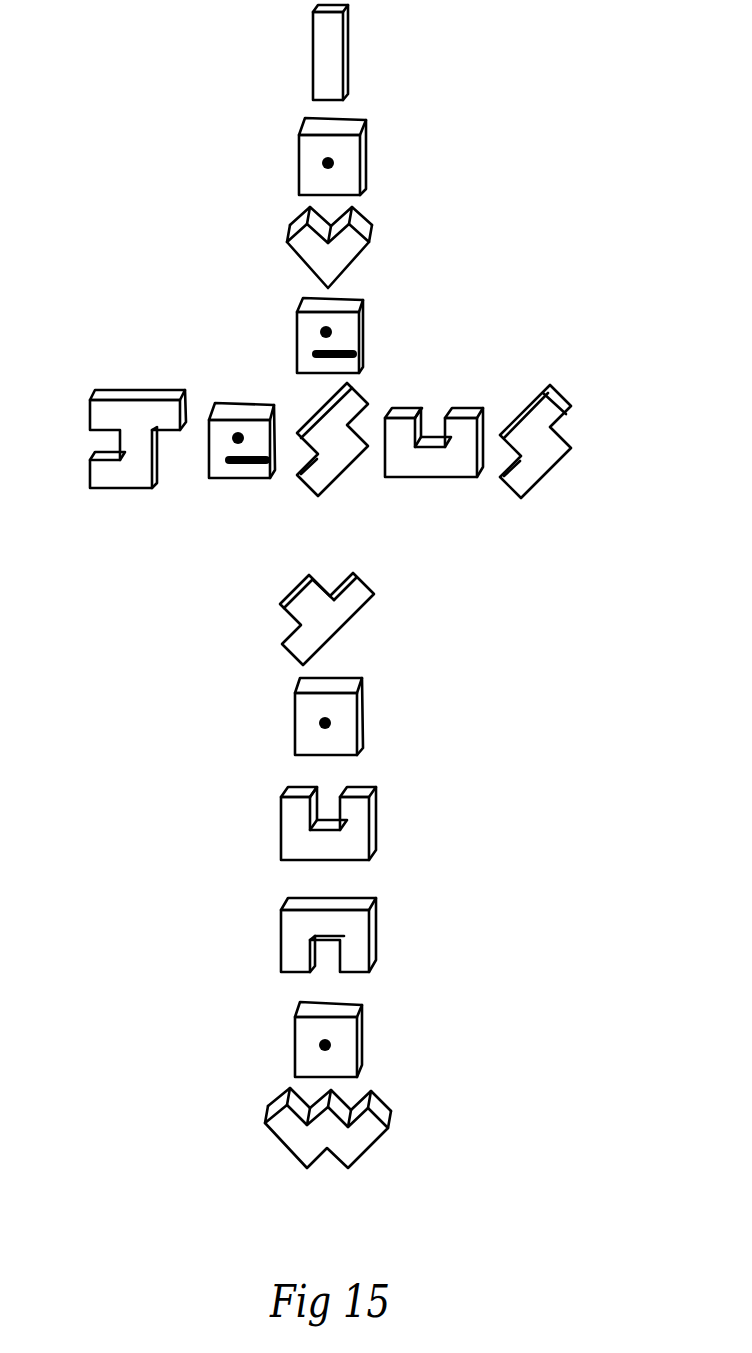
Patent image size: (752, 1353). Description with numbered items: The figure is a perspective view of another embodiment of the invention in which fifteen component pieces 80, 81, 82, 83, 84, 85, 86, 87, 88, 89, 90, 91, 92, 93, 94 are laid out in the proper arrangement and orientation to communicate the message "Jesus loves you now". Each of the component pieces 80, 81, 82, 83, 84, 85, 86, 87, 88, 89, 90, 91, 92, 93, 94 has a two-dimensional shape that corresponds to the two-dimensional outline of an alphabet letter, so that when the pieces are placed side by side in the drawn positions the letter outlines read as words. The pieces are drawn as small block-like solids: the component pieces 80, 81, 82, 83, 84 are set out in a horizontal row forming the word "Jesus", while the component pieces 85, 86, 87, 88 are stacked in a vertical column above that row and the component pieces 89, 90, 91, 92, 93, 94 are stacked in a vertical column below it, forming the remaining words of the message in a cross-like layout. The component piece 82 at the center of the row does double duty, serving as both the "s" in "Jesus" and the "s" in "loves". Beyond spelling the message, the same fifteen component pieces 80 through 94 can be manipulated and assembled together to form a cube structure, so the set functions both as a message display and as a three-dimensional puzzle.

The component piece 80 is at (120, 477).
The component piece 81 is at (233, 470).
The component piece 82 is at (345, 407).
The component piece 83 is at (467, 430).
The component piece 84 is at (550, 418).
The component piece 85 is at (328, 43).
The component piece 86 is at (308, 151).
The component piece 87 is at (287, 242).
The component piece 88 is at (308, 332).
The component piece 89 is at (337, 620).
The component piece 90 is at (363, 715).
The component piece 91 is at (362, 823).
The component piece 92 is at (362, 935).
The component piece 93 is at (348, 1035).
The component piece 94 is at (373, 1132).